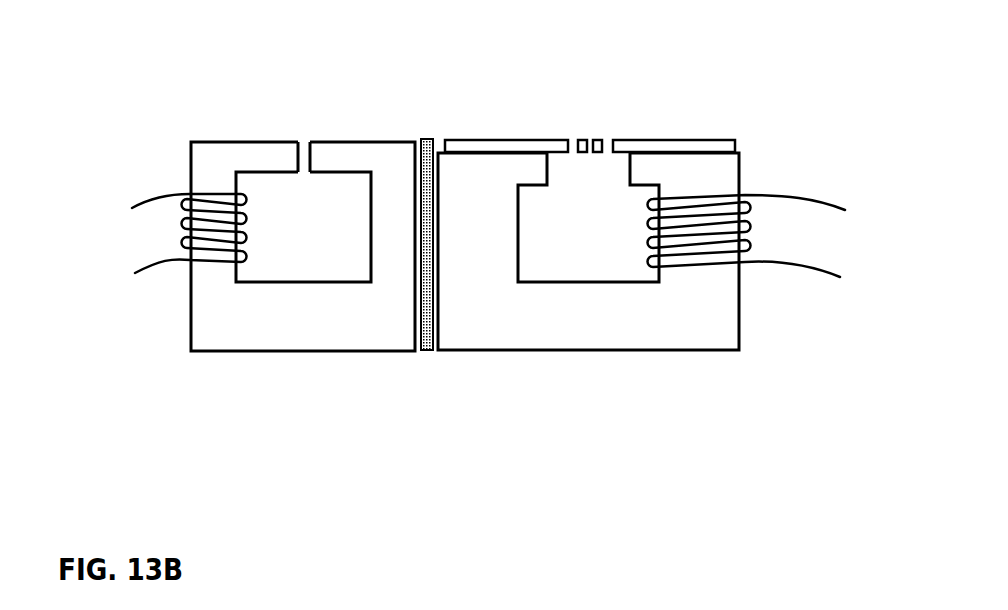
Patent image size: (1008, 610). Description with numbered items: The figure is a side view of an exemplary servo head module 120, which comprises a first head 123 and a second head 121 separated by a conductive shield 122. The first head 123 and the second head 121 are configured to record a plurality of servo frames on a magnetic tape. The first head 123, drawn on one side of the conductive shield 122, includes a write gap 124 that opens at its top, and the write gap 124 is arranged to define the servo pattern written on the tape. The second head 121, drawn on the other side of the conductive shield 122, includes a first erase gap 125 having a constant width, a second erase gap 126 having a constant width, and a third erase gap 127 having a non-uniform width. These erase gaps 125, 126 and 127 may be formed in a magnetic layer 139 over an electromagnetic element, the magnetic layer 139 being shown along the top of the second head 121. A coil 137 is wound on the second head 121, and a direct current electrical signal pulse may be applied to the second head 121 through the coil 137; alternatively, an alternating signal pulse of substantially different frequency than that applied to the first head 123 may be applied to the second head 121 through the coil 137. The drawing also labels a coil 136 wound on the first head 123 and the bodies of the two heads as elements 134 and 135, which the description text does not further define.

The servo head module 120 is at (345, 432).
The second head 121 is at (585, 340).
The conductive shield 122 is at (428, 360).
The first head 123 is at (268, 328).
The write gap 124 is at (300, 135).
The first erase gap 125 is at (570, 132).
The second erase gap 126 is at (589, 130).
The third erase gap 127 is at (610, 130).
The second yoke 134 is at (205, 318).
The first yoke 135 is at (720, 323).
The second coil 136 is at (190, 217).
The coil 137 is at (748, 218).
The magnetic layer 139 is at (722, 138).